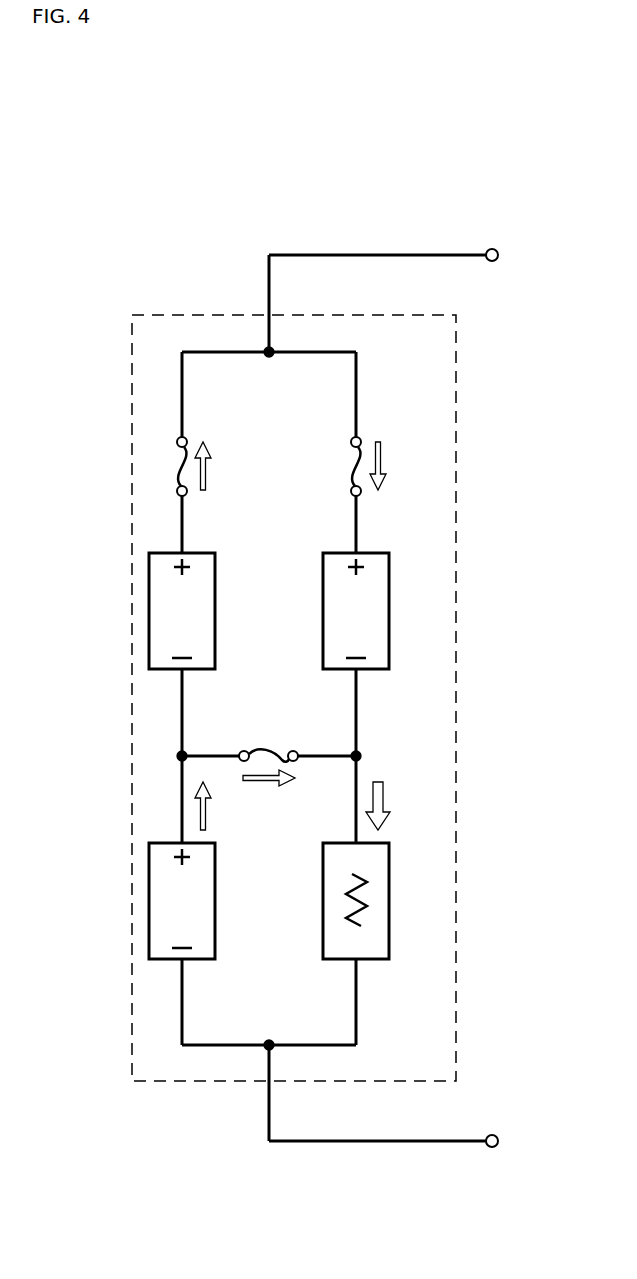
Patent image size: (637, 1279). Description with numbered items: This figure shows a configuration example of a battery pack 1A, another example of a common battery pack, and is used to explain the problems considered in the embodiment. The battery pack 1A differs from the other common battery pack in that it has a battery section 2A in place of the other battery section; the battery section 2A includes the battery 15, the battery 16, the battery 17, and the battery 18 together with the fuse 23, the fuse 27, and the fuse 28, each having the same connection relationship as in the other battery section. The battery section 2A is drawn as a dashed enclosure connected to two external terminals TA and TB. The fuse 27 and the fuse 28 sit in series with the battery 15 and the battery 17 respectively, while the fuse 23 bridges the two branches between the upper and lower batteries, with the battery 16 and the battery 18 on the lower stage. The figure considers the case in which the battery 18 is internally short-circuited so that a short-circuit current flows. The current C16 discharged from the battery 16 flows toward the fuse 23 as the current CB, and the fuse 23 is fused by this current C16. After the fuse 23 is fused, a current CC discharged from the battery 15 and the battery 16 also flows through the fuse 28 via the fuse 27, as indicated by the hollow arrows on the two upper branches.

The battery pack 1A is at (285, 128).
The battery section 2A is at (132, 727).
The terminal A TA is at (492, 249).
The terminal B TB is at (492, 1135).
The battery 15 is at (216, 611).
The battery 16 is at (216, 900).
The battery 17 is at (390, 611).
The battery 18 is at (390, 900).
The fuse 23 is at (258, 749).
The fuse 27 is at (175, 480).
The fuse 28 is at (350, 481).
The current CC is at (207, 480).
The current CB is at (268, 783).
The current C16 is at (207, 820).